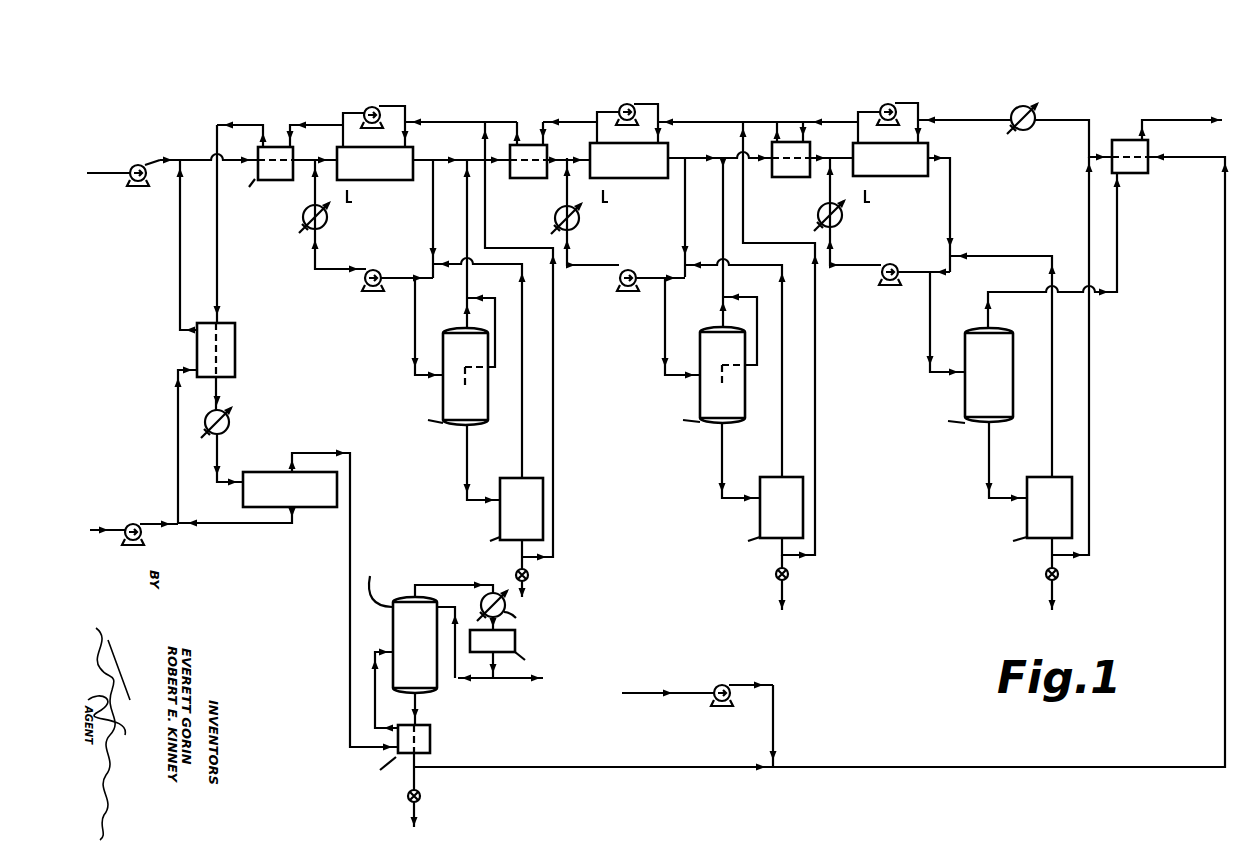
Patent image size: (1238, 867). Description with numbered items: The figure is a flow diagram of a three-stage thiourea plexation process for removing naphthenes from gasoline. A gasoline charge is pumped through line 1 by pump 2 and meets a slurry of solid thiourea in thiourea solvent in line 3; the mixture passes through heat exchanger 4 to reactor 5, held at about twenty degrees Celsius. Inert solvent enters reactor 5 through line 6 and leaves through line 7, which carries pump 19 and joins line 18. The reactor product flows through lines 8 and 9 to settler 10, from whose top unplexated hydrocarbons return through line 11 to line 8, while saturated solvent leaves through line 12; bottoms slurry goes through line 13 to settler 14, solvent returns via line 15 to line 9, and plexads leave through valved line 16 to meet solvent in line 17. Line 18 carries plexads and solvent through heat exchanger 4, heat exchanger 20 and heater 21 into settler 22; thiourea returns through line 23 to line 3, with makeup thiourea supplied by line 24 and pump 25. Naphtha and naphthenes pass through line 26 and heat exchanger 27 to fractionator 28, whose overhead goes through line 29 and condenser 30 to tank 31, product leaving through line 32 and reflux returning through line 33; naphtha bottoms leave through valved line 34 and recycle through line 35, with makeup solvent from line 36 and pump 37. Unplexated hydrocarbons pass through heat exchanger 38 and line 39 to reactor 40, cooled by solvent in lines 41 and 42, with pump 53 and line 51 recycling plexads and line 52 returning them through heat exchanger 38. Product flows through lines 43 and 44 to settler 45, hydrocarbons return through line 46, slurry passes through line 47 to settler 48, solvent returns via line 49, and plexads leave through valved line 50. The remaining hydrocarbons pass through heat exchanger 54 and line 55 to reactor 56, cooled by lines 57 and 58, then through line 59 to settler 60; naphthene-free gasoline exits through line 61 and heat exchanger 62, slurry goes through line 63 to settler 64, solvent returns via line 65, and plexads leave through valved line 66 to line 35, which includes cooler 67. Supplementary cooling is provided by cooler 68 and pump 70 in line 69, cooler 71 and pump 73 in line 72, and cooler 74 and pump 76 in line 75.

The line 1 is at (106, 178).
The pump 2 is at (133, 183).
The line 3 is at (172, 287).
The heat exchanger 4 is at (263, 184).
The reactor 5 is at (380, 177).
The line 6 is at (394, 126).
The line 7 is at (355, 130).
The line 8 is at (417, 158).
The line 9 is at (416, 269).
The settler 10 is at (422, 377).
The line 11 is at (453, 244).
The line 12 is at (477, 298).
The line 13 is at (470, 464).
The settler 14 is at (474, 512).
The line 15 is at (494, 368).
The valved line 16 is at (534, 359).
The line 17 is at (468, 114).
The line 18 is at (256, 120).
The pump 19 is at (370, 107).
The heat exchanger 20 is at (220, 323).
The heater 21 is at (226, 436).
The settler 22 is at (277, 470).
The line 23 is at (215, 532).
The line 24 is at (87, 548).
The pump 25 is at (150, 535).
The line 26 is at (302, 452).
The heat exchanger 27 is at (390, 760).
The fractionator 28 is at (418, 626).
The line 29 is at (470, 588).
The condenser 30 is at (508, 600).
The tank 31 is at (518, 643).
The line 32 is at (543, 676).
The line 33 is at (439, 610).
The valved line 34 is at (437, 765).
The line 35 is at (957, 120).
The line 36 is at (792, 726).
The pump 37 is at (704, 708).
The heat exchanger 38 is at (528, 182).
The line 39 is at (557, 160).
The reactor 40 is at (635, 175).
The line 41 is at (679, 110).
The line 42 is at (599, 129).
The line 43 is at (698, 160).
The line 44 is at (665, 268).
The settler 45 is at (678, 377).
The line 46 is at (708, 242).
The line 47 is at (731, 299).
The settler 48 is at (735, 512).
The line 49 is at (735, 368).
The valved line 50 is at (778, 556).
The line 51 is at (693, 120).
The line 52 is at (581, 119).
The pump 53 is at (630, 104).
The heat exchanger 54 is at (790, 169).
The line 55 is at (813, 160).
The reactor 56 is at (896, 175).
The line 57 is at (920, 109).
The line 58 is at (876, 127).
The line 59 is at (941, 265).
The settler 60 is at (945, 377).
The line 61 is at (1167, 126).
The heat exchanger 62 is at (1163, 177).
The line 63 is at (994, 462).
The settler 64 is at (1002, 512).
The line 65 is at (1003, 365).
The valved line 66 is at (1048, 551).
The cooler 67 is at (1026, 134).
The cooler 68 is at (327, 200).
The line 69 is at (339, 251).
The pump 70 is at (380, 273).
The cooler 71 is at (580, 199).
The line 72 is at (592, 249).
The pump 73 is at (636, 273).
The cooler 74 is at (843, 199).
The line 75 is at (854, 248).
The pump 76 is at (897, 267).